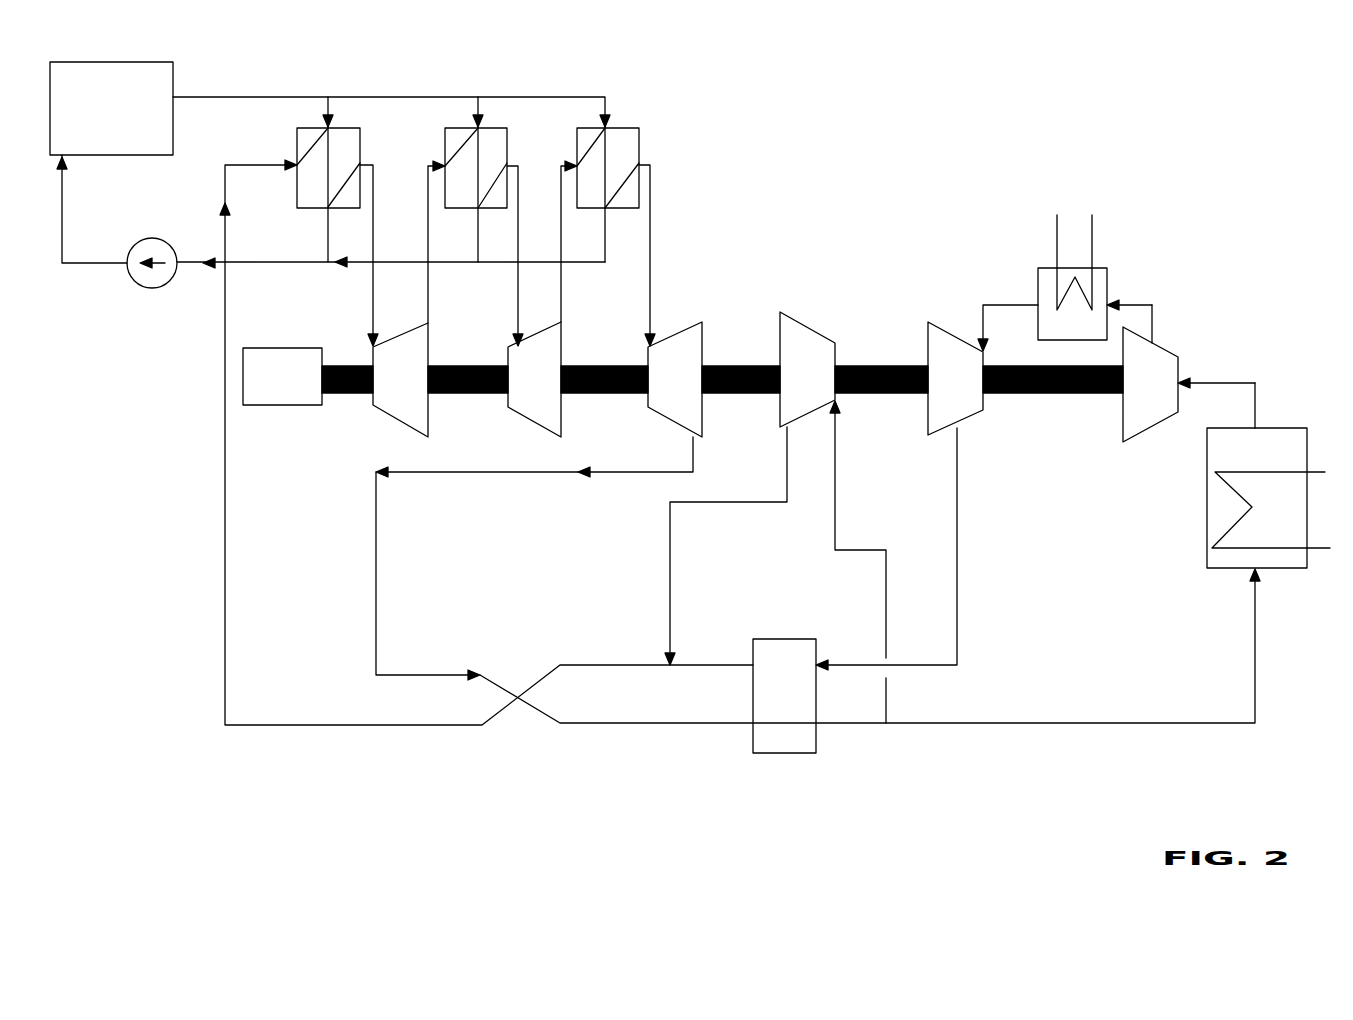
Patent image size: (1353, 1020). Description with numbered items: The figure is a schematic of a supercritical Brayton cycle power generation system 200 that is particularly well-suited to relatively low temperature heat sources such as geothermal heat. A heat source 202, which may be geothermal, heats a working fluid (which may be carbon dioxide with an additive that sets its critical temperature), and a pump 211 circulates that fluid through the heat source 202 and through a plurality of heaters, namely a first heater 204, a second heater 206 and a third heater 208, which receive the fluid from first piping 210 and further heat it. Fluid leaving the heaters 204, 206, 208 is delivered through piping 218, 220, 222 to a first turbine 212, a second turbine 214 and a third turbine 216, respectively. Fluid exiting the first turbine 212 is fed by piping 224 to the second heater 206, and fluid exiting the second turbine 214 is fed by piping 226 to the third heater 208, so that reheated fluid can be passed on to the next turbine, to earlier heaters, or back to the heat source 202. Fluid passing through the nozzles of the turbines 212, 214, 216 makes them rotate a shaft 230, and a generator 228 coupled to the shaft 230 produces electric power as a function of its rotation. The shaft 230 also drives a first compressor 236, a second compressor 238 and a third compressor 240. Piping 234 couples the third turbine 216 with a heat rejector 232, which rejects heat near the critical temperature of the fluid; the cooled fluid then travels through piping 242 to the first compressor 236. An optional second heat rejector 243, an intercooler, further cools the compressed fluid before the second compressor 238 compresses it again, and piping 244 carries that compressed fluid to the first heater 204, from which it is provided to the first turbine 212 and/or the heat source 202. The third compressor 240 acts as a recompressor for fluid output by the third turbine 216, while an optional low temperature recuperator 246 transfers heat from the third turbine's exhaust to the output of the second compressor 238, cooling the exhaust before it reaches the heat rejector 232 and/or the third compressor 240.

The supercritical Brayton cycle power generation system 200 is at (1168, 102).
The heat source 202 is at (87, 62).
The first heater 204 is at (337, 128).
The second heater 206 is at (487, 130).
The third heater 208 is at (617, 130).
The first piping 210 is at (225, 97).
The pump 211 is at (148, 238).
The first turbine 212 is at (430, 412).
The second turbine 214 is at (565, 410).
The third turbine 216 is at (707, 410).
The piping 218 is at (373, 290).
The piping 220 is at (518, 280).
The piping 222 is at (650, 277).
The piping 224 is at (428, 177).
The piping 226 is at (563, 168).
The generator 228 is at (312, 407).
The shaft 230 is at (348, 395).
The heat rejector 232 is at (1283, 568).
The piping 234 is at (1143, 723).
The first compressor 236 is at (1165, 347).
The second compressor 238 is at (942, 317).
The third compressor 240 is at (803, 323).
The piping 242 is at (1228, 380).
The second heat rejector 243 is at (1107, 277).
The piping 244 is at (956, 533).
The low temperature recuperator 246 is at (787, 639).